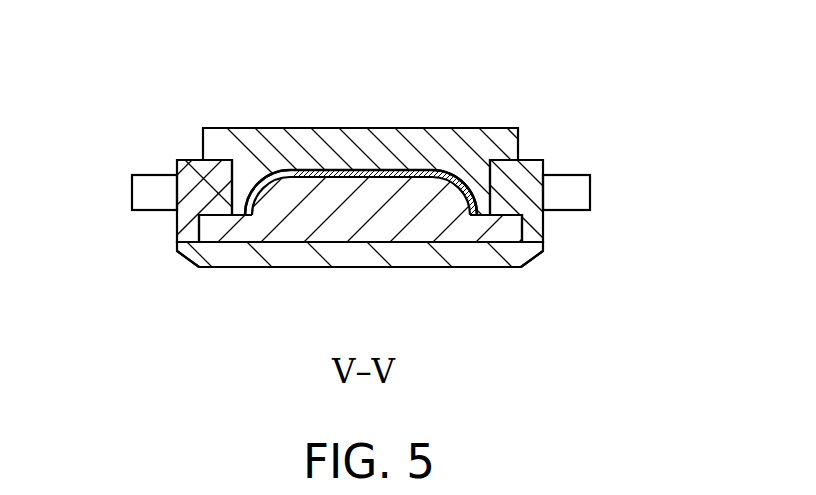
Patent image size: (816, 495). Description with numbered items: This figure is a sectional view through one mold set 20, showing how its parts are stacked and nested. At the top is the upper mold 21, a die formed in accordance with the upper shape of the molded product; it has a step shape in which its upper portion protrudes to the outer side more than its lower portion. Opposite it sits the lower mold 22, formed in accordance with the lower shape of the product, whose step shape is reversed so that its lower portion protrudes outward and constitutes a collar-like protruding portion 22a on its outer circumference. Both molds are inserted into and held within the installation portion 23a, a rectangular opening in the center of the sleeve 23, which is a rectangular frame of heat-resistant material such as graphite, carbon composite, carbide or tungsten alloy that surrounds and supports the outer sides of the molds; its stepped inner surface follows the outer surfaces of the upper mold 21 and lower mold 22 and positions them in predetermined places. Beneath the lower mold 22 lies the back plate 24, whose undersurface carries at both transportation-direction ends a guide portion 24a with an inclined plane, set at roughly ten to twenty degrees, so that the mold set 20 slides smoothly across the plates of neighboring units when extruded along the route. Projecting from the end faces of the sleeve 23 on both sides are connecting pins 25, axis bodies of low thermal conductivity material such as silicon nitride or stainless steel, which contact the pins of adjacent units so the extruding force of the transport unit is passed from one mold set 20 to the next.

The mold set 20 is at (386, 80).
The upper mold 21 is at (462, 127).
The lower mold 22 is at (291, 196).
The protruding portion 22a is at (208, 228).
The sleeve 23 is at (536, 165).
The installation portion 23a is at (482, 192).
The back plate 24 is at (488, 258).
The guide portion 24a is at (187, 262).
The connecting pin 25 is at (148, 184).